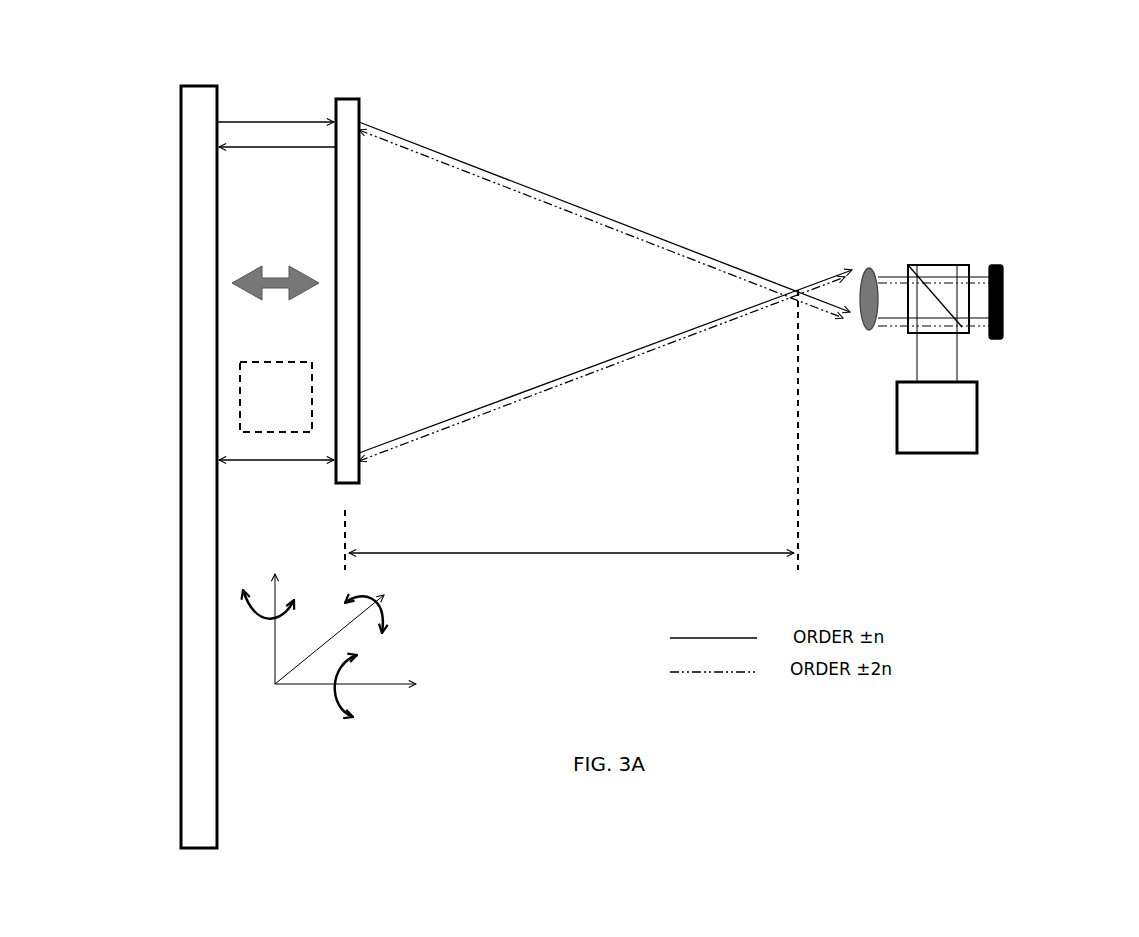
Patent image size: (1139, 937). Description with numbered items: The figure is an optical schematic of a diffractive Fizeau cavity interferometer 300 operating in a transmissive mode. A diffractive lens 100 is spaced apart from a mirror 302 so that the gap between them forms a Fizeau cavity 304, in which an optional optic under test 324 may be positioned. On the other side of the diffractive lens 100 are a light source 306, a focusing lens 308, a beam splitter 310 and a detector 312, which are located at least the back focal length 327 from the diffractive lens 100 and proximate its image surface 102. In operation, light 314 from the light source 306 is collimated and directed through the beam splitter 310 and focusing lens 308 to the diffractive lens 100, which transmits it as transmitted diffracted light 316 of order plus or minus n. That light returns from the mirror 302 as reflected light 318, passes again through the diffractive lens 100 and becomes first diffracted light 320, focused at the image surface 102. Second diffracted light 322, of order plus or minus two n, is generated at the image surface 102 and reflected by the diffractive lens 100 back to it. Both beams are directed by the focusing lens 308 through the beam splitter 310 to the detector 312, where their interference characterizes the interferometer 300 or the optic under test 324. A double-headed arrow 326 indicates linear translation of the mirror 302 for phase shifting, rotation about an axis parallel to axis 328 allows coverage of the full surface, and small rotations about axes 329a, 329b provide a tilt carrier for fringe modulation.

The diffractive Fizeau cavity interferometer 300 is at (385, 85).
The mirror 302 is at (200, 435).
The Fizeau cavity 304 is at (298, 230).
The diffractive lens 100 is at (347, 368).
The reflected light 318 is at (297, 120).
The transmitted diffracted light 316 is at (277, 148).
The double-headed arrow 326 is at (280, 287).
The optic under test 324 is at (276, 397).
The second diffracted light 322 is at (530, 197).
The first diffracted light 320 is at (543, 383).
The back focal length 327 is at (569, 521).
The image surface 102 is at (800, 489).
The focusing lens 308 is at (868, 332).
The beam splitter 310 is at (937, 265).
The detector 312 is at (1020, 271).
The light 314 is at (960, 352).
The light source 306 is at (937, 417).
The axis 328 is at (333, 685).
The axis 329a is at (272, 610).
The axis 329b is at (386, 599).